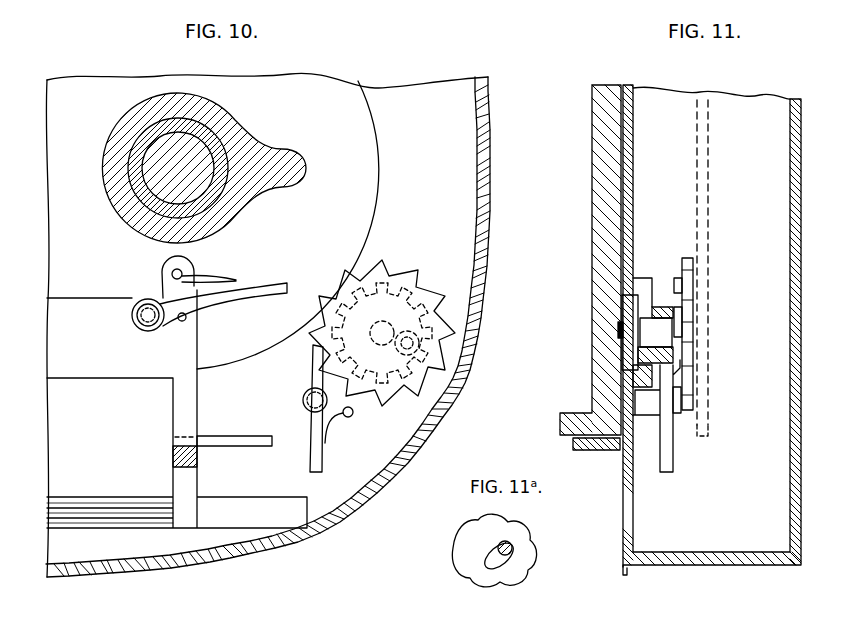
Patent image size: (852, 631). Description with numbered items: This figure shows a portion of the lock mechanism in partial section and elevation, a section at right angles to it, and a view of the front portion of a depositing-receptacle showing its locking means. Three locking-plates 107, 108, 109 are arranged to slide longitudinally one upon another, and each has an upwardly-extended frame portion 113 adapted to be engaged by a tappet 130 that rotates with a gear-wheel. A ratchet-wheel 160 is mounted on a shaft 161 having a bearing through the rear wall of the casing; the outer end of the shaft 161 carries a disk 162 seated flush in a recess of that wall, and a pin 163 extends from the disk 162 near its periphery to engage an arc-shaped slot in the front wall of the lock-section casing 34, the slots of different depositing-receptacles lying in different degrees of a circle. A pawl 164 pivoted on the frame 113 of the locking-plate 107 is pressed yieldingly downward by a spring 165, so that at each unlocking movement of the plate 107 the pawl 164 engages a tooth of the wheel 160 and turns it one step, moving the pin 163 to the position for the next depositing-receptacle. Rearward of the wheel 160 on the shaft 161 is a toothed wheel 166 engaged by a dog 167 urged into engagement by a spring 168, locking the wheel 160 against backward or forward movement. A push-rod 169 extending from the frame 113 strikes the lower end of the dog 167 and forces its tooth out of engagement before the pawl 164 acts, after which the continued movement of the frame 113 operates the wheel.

In FIG. 11a, the lock-section casing 34 is at (457, 543).
In FIG. 10, the locking-plate 107 is at (153, 507).
In FIG. 10, the locking-plate 108 is at (108, 513).
In FIG. 10, the locking-plate 109 is at (133, 520).
In FIG. 10, the frame portion 113 is at (108, 330).
In FIG. 10, the tappet 130 is at (292, 163).
In FIG. 10, the ratchet-wheel 160 is at (420, 300).
In FIG. 11, the ratchet-wheel 160 is at (682, 256).
In FIG. 10, the shaft 161 is at (382, 333).
In FIG. 11, the shaft 161 is at (653, 332).
In FIG. 11, the disk 162 is at (630, 357).
In FIG. 10, the pin 163 is at (410, 333).
In FIG. 11, the pin 163 is at (619, 330).
In FIG. 11a, the pin 163 is at (511, 556).
In FIG. 10, the pawl 164 is at (251, 288).
In FIG. 10, the spring 165 is at (227, 274).
In FIG. 10, the toothed wheel 166 is at (430, 357).
In FIG. 11, the toothed wheel 166 is at (674, 284).
In FIG. 10, the dog 167 is at (313, 378).
In FIG. 10, the spring 168 is at (328, 440).
In FIG. 10, the push-rod 169 is at (237, 438).